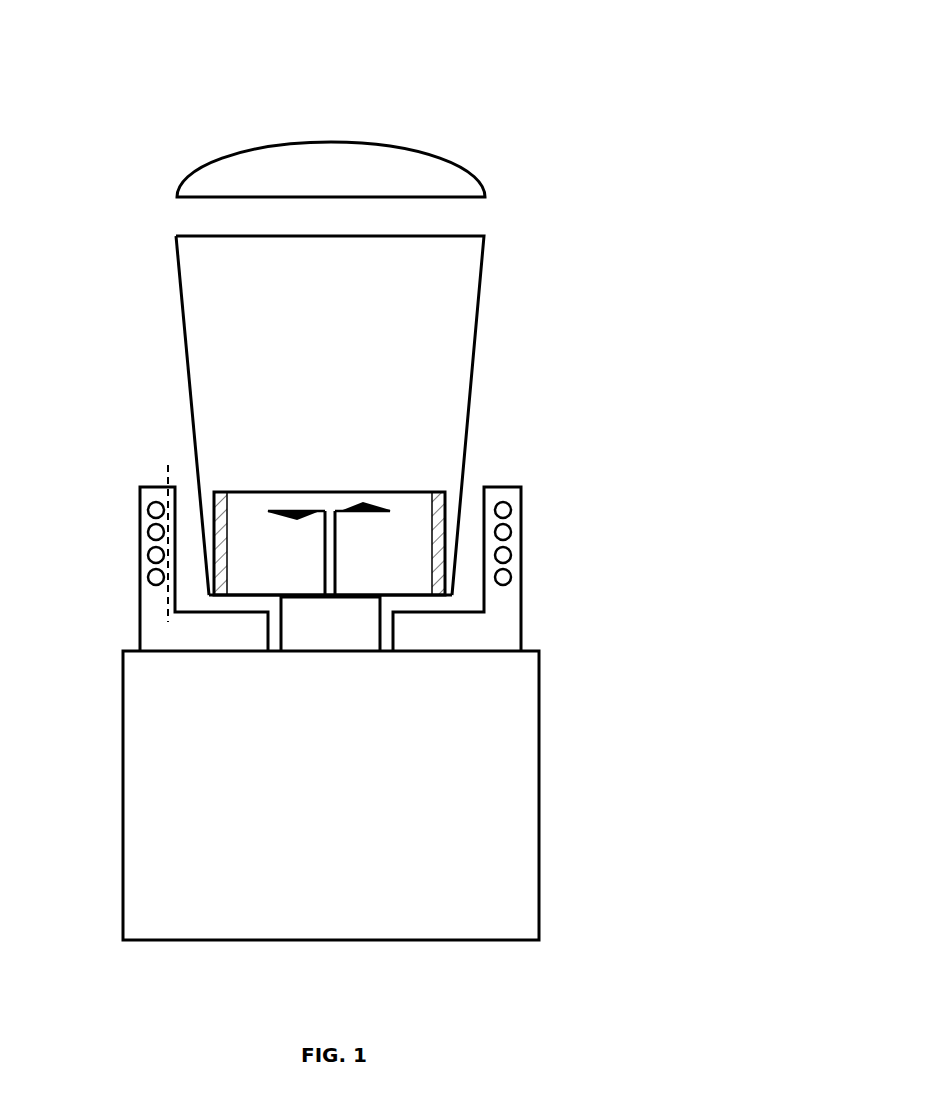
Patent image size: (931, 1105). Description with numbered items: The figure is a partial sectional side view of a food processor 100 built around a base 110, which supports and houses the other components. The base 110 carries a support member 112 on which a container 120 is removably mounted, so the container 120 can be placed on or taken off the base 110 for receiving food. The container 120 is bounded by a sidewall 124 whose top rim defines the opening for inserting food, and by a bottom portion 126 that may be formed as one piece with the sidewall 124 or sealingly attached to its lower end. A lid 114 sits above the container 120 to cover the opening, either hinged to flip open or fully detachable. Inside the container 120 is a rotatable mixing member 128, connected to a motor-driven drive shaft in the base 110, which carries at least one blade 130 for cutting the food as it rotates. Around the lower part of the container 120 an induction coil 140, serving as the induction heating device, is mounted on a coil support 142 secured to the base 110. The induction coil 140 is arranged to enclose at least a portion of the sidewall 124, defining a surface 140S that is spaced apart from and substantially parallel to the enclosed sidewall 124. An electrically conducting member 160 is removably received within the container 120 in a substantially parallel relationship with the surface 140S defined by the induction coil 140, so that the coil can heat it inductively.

The food processor 100 is at (490, 80).
The base 110 is at (518, 752).
The support member 112 is at (342, 635).
The lid 114 is at (253, 147).
The container 120 is at (463, 275).
The sidewall 124 is at (177, 278).
The bottom portion 126 is at (262, 594).
The rotatable mixing member 128 is at (332, 567).
The blade 130 is at (363, 503).
The induction coil 140 is at (157, 555).
The surface 140S is at (167, 477).
The coil support 142 is at (503, 630).
The electrically conducting member 160 is at (220, 522).